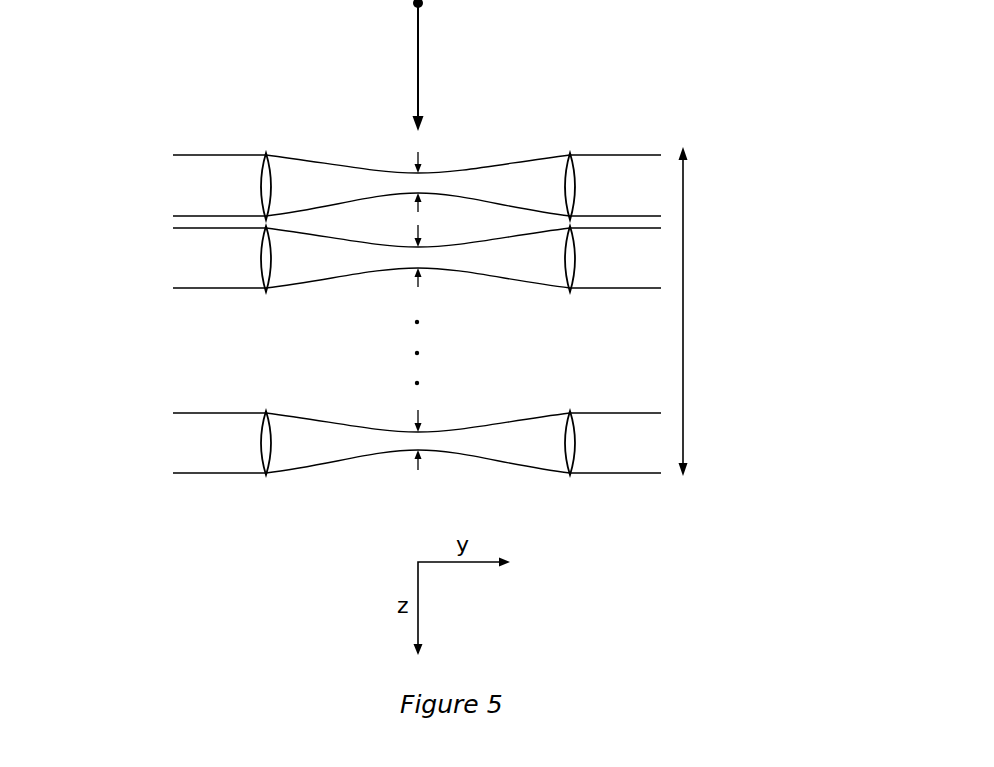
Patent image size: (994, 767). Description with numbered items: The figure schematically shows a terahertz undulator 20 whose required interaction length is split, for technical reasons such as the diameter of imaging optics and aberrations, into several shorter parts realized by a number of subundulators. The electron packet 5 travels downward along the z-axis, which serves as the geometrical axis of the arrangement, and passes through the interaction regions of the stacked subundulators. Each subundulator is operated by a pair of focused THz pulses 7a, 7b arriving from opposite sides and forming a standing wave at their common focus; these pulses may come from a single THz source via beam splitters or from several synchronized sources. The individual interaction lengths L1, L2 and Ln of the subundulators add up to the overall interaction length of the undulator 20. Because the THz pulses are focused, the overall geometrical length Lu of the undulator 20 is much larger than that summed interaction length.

The undulator 20 is at (152, 74).
The electron packet 5 is at (427, 65).
The THz pulse 7a is at (227, 314).
The THz pulse 7b is at (608, 314).
The interaction length of first subundulator L1 is at (438, 180).
The interaction length of second subundulator L2 is at (438, 253).
The interaction length of n-th subundulator Ln is at (439, 436).
The overall geometrical length of the undulator Lu is at (702, 311).